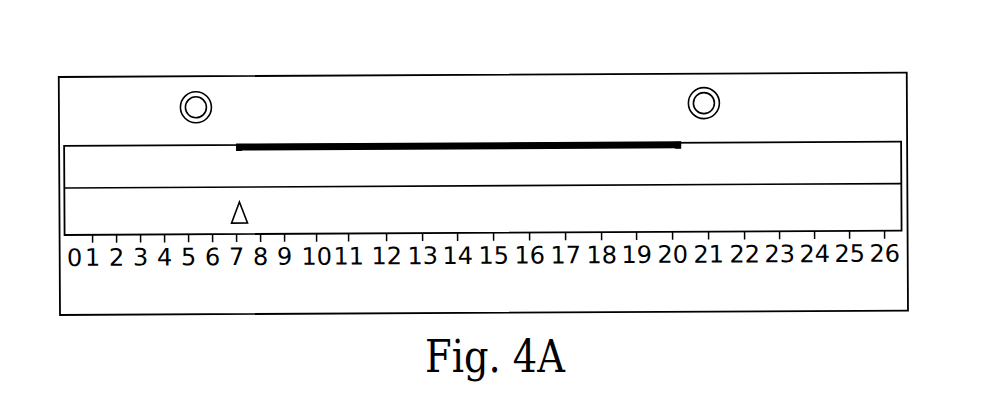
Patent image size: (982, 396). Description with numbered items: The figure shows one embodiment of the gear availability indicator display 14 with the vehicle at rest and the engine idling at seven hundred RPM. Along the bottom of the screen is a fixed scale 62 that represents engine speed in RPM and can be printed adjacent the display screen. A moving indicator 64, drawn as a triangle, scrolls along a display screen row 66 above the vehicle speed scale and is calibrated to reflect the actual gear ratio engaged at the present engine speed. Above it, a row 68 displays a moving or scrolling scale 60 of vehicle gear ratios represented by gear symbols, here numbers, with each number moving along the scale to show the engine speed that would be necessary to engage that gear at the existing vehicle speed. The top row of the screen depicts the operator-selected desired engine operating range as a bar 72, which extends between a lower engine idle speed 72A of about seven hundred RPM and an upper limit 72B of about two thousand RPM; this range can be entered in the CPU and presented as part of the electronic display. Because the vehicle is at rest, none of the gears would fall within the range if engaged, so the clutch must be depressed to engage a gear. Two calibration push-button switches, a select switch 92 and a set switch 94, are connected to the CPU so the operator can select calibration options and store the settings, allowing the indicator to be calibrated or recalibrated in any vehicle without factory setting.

The display 14 is at (79, 72).
The scrolling scale of vehicle gear ratios 60 is at (107, 155).
The fixed scale 62 is at (92, 272).
The moving indicator 64 is at (247, 212).
The display screen row 66 is at (353, 201).
The row 68 is at (472, 169).
The bar 72 is at (590, 143).
The lower engine idle speed 72A is at (240, 151).
The upper limit 72B is at (683, 149).
The select switch 92 is at (199, 92).
The set switch 94 is at (710, 93).